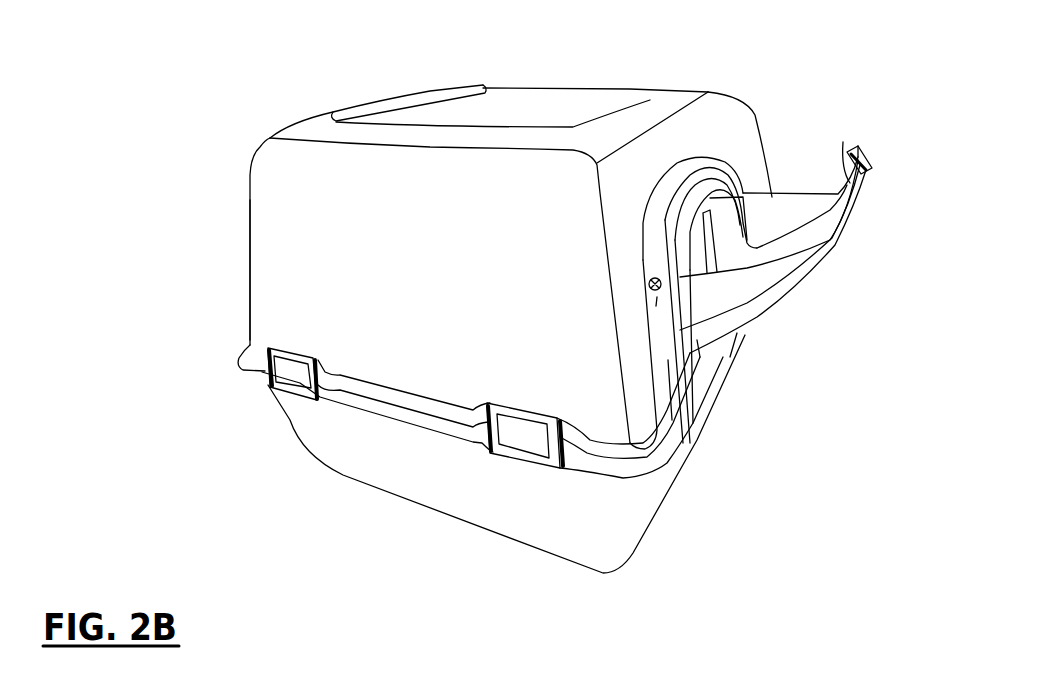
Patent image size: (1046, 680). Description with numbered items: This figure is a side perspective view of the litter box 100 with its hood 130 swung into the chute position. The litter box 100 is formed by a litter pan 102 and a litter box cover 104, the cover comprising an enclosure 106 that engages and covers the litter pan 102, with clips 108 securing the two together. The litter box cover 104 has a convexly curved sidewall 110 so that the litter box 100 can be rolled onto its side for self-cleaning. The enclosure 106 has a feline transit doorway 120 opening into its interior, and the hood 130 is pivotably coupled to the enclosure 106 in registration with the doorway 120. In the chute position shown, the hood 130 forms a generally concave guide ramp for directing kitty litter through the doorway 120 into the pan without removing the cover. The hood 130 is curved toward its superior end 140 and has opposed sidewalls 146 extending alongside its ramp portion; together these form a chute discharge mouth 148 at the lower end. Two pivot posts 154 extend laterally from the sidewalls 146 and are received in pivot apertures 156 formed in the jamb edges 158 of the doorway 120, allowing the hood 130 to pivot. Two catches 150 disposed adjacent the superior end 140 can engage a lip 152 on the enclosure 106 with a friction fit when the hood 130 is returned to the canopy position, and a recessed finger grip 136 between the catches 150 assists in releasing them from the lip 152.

The litter box 100 is at (147, 274).
The litter pan 102 is at (293, 446).
The litter box cover 104 is at (233, 309).
The enclosure 106 is at (247, 230).
The clips 108 is at (520, 415).
The convexly curved sidewall 110 is at (732, 100).
The feline transit doorway 120 is at (700, 361).
The hood 130 is at (822, 270).
The recessed finger grip 136 is at (860, 180).
The superior end 140 is at (877, 168).
The sidewalls 146 is at (713, 290).
The chute discharge mouth 148 is at (690, 231).
The catches 150 is at (860, 152).
The lip 152 is at (613, 113).
The pivot posts 154 is at (648, 285).
The pivot apertures 156 is at (657, 297).
The jamb edges 158 is at (662, 390).